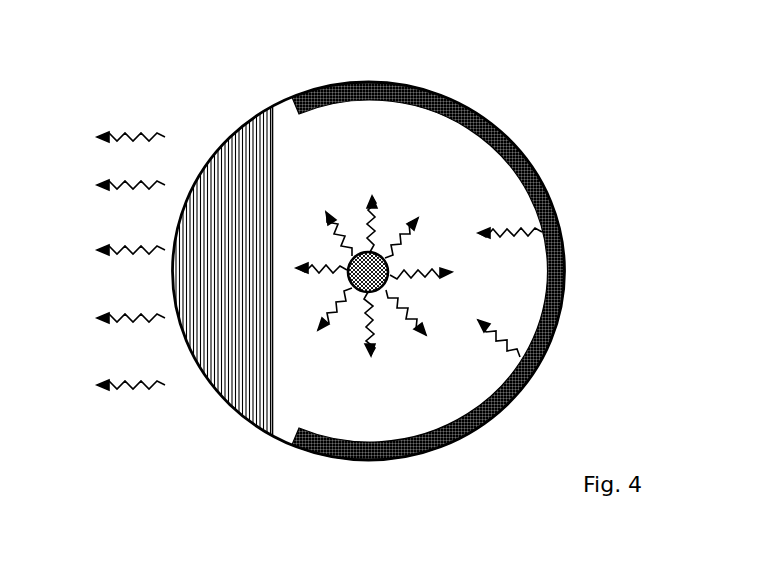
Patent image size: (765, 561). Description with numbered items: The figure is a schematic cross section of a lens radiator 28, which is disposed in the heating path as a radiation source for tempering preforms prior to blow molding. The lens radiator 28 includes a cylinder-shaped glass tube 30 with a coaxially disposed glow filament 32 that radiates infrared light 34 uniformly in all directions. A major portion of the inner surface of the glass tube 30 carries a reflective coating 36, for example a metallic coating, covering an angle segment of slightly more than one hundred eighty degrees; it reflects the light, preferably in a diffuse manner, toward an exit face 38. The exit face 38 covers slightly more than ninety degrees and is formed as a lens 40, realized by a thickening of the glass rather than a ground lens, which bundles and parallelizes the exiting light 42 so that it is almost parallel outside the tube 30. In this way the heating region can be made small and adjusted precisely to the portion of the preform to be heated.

The lens radiator 28 is at (203, 85).
The glass tube 30 is at (375, 82).
The glow filament 32 is at (387, 287).
The infrared light 34 is at (365, 335).
The reflective coating 36 is at (505, 132).
The exit face 38 is at (308, 402).
The lens 40 is at (242, 118).
The exiting light 42 is at (140, 387).